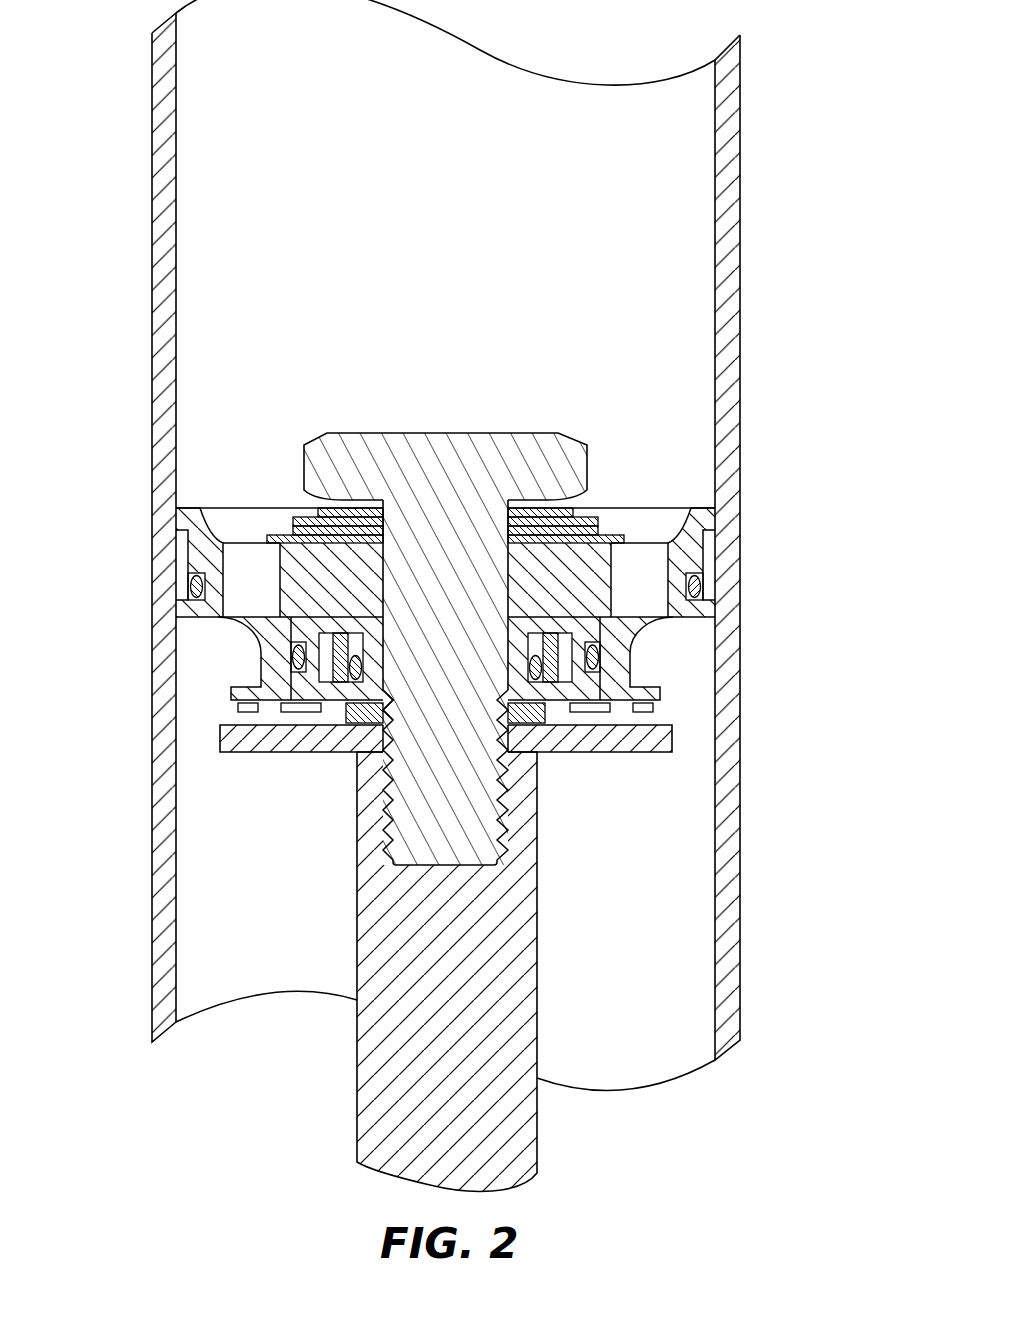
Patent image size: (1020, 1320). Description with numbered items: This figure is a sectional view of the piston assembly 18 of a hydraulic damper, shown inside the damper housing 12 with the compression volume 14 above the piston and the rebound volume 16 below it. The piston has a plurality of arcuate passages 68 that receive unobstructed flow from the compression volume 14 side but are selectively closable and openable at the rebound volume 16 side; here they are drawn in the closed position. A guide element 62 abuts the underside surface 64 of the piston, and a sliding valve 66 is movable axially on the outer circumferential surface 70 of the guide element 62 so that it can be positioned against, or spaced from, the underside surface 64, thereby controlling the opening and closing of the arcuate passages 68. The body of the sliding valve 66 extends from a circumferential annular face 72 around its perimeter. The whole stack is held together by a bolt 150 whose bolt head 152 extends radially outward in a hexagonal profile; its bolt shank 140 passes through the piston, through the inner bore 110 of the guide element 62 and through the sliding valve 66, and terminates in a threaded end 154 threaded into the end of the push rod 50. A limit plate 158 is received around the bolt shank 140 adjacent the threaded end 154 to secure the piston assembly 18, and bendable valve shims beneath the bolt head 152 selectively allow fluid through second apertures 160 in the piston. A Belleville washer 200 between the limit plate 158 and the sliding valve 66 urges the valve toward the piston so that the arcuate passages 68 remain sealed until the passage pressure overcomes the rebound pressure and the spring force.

The damper housing 12 is at (728, 203).
The compression volume 14 is at (484, 260).
The rebound volume 16 is at (648, 902).
The piston assembly 18 is at (762, 508).
The push rod 50 is at (510, 975).
The guide element 62 is at (268, 681).
The underside surface 64 is at (216, 618).
The sliding valve 66 is at (640, 645).
The arcuate passages 68 is at (250, 572).
The outer circumferential surface 70 is at (643, 580).
The circumferential annular face 72 is at (232, 626).
The inner bore 110 is at (400, 712).
The bolt shank 140 is at (405, 735).
The bolt 150 is at (330, 467).
The bolt head 152 is at (562, 462).
The threaded end 154 is at (500, 775).
The limit plate 158 is at (675, 740).
The second apertures 160 is at (597, 505).
The Belleville washer 200 is at (620, 748).